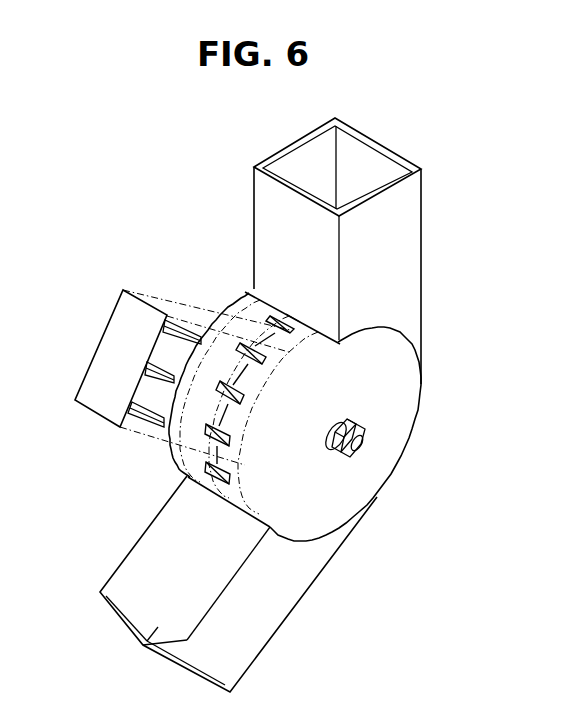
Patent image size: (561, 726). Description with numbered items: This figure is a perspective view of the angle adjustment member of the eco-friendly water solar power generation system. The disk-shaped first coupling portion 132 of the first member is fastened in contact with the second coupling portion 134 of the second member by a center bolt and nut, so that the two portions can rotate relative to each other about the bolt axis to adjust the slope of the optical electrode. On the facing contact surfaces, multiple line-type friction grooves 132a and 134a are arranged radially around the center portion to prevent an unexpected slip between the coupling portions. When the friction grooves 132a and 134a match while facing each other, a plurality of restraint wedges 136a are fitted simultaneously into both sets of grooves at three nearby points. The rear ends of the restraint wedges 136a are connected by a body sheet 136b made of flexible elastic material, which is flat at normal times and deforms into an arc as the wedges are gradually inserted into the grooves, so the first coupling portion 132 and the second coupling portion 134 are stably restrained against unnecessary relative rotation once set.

The first coupling portion 132 is at (187, 466).
The friction grooves 132a is at (272, 318).
The second coupling portion 134 is at (412, 406).
The friction grooves 134a is at (292, 318).
The restraint wedges 136a is at (186, 320).
The body sheets 136b is at (107, 348).